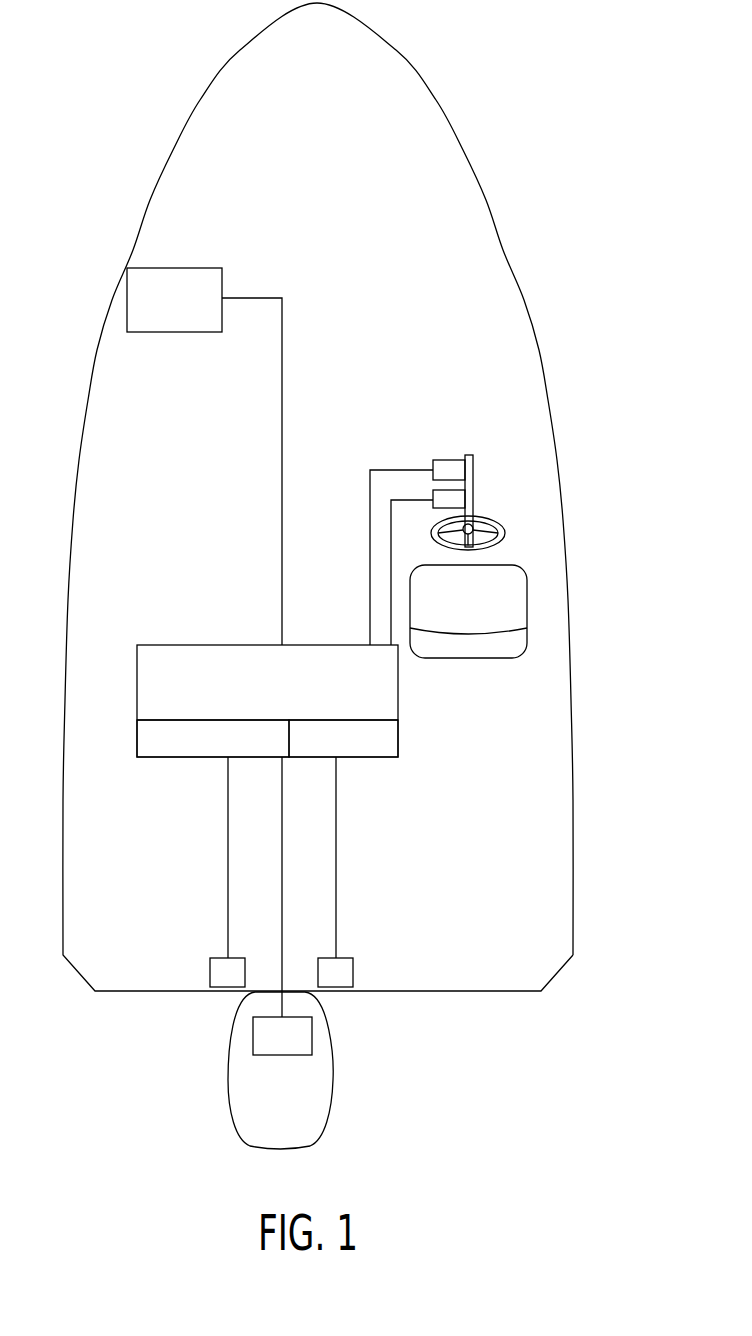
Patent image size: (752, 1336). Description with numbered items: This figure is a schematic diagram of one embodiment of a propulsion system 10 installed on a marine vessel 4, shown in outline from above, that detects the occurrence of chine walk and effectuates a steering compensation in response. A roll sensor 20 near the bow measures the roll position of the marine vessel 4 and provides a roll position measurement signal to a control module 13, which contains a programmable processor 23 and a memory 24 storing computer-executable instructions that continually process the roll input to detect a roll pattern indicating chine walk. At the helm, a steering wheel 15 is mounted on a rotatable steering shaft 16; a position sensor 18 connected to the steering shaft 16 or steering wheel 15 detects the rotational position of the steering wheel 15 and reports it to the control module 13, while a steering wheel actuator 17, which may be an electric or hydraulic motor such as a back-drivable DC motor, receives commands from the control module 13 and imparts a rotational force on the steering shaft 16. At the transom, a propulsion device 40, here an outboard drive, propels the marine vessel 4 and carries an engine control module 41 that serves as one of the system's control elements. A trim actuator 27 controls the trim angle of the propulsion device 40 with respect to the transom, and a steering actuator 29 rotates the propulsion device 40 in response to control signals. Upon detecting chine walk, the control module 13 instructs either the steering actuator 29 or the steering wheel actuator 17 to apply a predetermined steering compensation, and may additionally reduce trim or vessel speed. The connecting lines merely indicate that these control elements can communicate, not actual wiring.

The propulsion system 10 is at (160, 97).
The marine vessel 4 is at (435, 97).
The roll sensor 20 is at (175, 268).
The control module 13 is at (137, 700).
The processor 23 is at (182, 757).
The memory 24 is at (363, 757).
The steering wheel actuator 17 is at (448, 460).
The position sensor 18 is at (433, 505).
The steering shaft 16 is at (473, 500).
The steering wheel 15 is at (505, 533).
The trim actuator 27 is at (215, 958).
The steering actuator 29 is at (348, 958).
The propulsion device 40 is at (330, 1113).
The engine control module 41 is at (312, 1045).